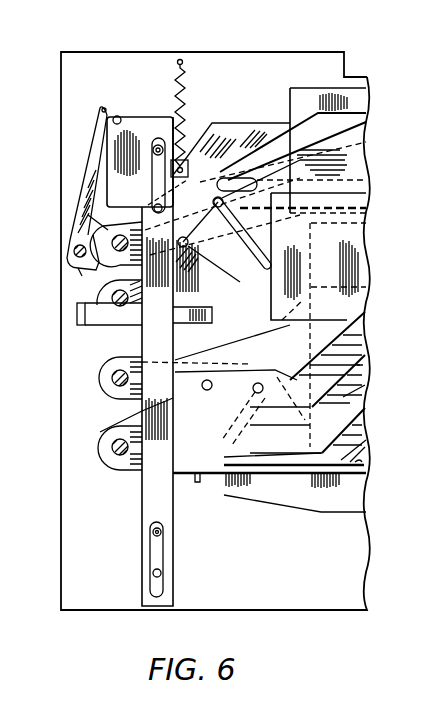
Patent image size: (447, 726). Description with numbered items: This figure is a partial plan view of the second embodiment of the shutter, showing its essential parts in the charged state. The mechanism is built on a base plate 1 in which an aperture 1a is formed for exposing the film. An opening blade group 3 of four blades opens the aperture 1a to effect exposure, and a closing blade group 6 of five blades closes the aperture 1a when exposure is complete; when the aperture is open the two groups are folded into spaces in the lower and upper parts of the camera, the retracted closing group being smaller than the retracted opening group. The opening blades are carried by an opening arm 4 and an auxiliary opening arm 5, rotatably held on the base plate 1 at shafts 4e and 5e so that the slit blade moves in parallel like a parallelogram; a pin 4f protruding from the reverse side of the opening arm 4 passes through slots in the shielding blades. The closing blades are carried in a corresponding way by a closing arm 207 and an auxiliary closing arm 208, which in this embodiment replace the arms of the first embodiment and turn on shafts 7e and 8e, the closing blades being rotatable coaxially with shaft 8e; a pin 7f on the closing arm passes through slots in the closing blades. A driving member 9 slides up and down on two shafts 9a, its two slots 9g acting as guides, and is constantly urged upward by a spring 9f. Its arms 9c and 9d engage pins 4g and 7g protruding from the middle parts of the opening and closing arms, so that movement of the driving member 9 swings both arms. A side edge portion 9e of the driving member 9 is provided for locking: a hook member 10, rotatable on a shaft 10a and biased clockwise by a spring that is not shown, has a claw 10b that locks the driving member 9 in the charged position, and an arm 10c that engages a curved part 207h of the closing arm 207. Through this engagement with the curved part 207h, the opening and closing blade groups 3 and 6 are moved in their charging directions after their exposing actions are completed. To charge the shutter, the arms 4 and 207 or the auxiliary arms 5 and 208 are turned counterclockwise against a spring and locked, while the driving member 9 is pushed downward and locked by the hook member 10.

The base plate 1 is at (346, 558).
The aperture 1a is at (362, 462).
The opening blade group 3 is at (389, 245).
The opening arm 4 is at (110, 397).
The shaft 4e is at (112, 380).
The pin 4f is at (259, 362).
The pin 4g is at (207, 380).
The auxiliary opening arm 5 is at (110, 432).
The shaft 5e is at (112, 448).
The closing blade group 6 is at (402, 82).
The shaft 7e is at (128, 302).
The pin 7f is at (218, 197).
The pin 7g is at (188, 247).
The shaft 8e is at (112, 243).
The driving member 9 is at (150, 500).
The shafts 9a is at (153, 145).
The arm 9c is at (197, 478).
The arm 9d is at (213, 316).
The side edge portion 9e is at (118, 117).
The spring 9f is at (182, 62).
The slots 9g is at (153, 573).
The hook member 10 is at (95, 140).
The shaft 10a is at (68, 253).
The claw 10b is at (104, 107).
The arm 10c is at (78, 277).
The closing arm 207 is at (93, 325).
The curved part 207h is at (77, 311).
The auxiliary closing arm 208 is at (103, 227).